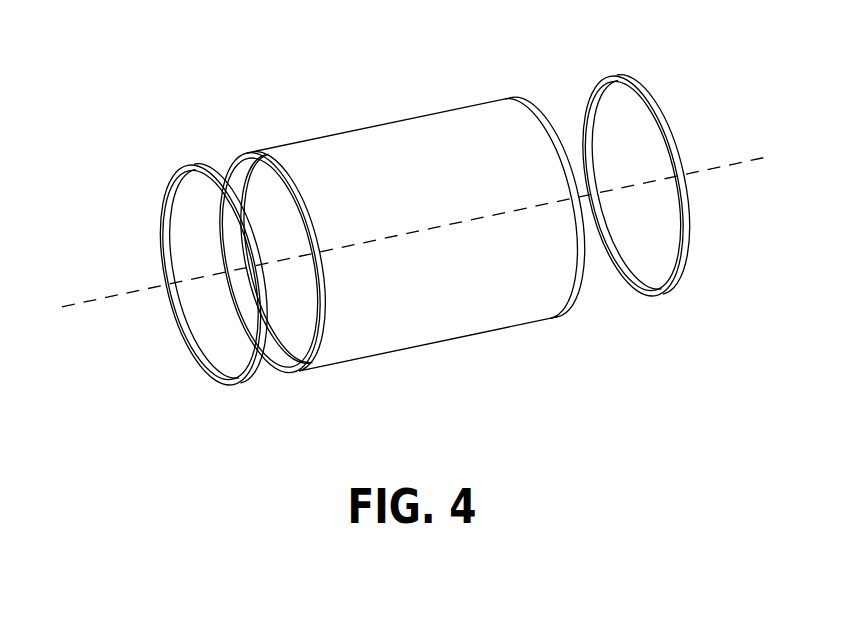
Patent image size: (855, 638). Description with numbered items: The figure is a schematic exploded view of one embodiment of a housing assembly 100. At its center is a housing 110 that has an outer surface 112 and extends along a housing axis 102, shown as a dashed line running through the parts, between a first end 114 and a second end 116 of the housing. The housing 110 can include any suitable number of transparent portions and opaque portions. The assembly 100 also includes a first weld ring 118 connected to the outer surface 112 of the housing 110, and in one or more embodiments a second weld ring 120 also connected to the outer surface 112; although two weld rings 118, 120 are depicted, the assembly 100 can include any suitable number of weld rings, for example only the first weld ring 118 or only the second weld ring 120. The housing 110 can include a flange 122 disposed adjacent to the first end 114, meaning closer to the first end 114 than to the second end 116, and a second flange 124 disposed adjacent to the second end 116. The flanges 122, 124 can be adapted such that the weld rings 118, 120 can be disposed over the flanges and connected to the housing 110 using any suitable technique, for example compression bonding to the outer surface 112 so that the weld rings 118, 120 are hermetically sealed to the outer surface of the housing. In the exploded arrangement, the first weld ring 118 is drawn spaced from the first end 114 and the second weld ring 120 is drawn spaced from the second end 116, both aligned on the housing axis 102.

The housing assembly 100 is at (450, 55).
The housing axis 102 is at (87, 301).
The housing 110 is at (287, 110).
The outer surface 112 is at (367, 127).
The first end 114 is at (313, 370).
The second end 116 is at (580, 293).
The first weld ring 118 is at (181, 343).
The second weld ring 120 is at (688, 222).
The flange 122 is at (323, 274).
The second flange 124 is at (552, 130).